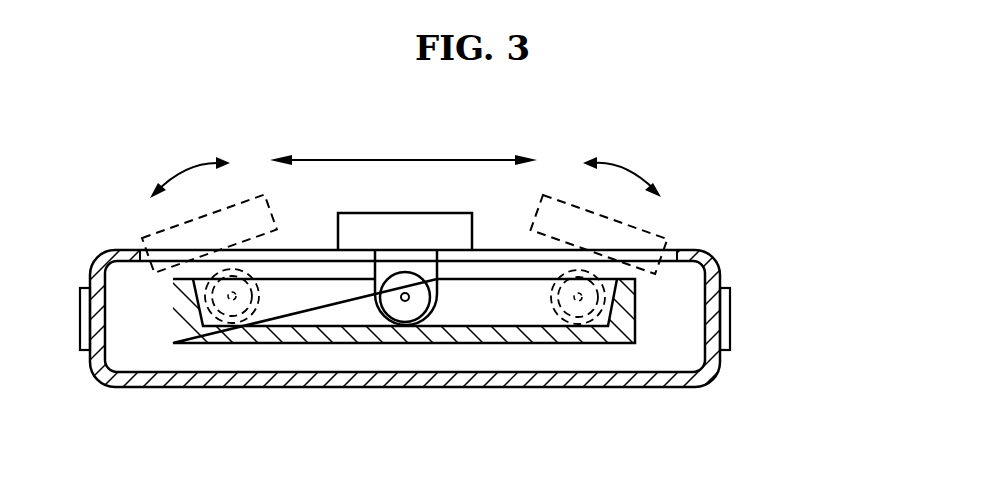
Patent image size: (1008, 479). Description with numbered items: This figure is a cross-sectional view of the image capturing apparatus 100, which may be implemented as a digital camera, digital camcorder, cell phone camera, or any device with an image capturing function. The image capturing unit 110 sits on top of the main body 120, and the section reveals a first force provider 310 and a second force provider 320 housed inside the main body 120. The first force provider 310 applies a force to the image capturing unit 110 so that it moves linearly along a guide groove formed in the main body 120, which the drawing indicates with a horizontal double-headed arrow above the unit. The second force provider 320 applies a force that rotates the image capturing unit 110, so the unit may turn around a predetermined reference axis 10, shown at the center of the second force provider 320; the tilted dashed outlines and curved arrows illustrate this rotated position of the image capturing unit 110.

The image capturing apparatus 100 is at (708, 197).
The image capturing unit 110 is at (452, 220).
The main body 120 is at (713, 253).
The first force provider 310 is at (635, 342).
The second force provider 320 is at (417, 307).
The reference axis 10 is at (402, 302).